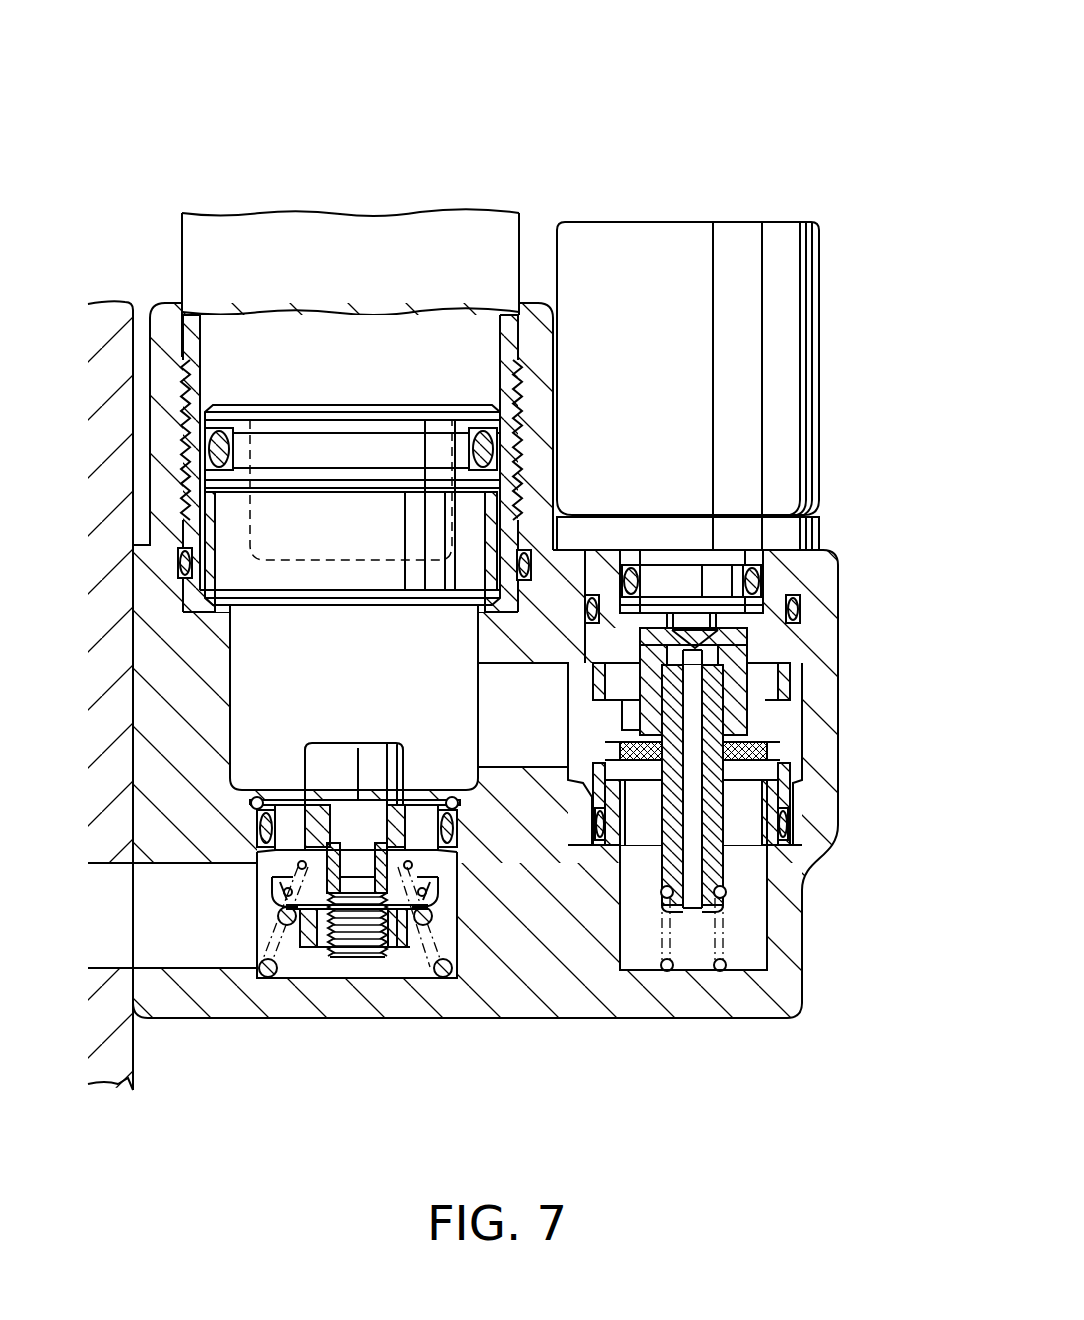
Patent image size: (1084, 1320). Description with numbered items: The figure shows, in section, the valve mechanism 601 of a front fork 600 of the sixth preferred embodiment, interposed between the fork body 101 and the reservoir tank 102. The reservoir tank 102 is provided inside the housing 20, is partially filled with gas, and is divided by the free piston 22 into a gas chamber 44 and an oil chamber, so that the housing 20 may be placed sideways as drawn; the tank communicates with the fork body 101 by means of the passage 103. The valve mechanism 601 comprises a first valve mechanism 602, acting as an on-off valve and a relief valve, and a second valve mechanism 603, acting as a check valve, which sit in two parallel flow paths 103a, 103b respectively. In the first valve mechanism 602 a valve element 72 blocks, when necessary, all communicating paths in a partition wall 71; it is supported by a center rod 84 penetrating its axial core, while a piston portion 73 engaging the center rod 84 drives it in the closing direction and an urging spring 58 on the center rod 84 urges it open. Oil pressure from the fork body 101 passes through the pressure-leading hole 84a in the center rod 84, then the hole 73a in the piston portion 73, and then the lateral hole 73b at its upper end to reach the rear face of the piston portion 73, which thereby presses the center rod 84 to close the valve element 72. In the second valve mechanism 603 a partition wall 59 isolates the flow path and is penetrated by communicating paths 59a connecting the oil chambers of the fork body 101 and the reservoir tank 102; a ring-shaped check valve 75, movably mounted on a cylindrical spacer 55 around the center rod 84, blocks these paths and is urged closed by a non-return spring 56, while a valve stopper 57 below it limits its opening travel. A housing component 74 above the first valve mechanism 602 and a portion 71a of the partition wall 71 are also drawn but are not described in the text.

The front fork 600 is at (509, 594).
The valve mechanism 601 is at (744, 580).
The reservoir tank 102 is at (343, 206).
The actuator case 74 is at (668, 221).
The fork body 101 is at (109, 296).
The gas chamber 44 is at (364, 369).
The first valve mechanism 602 is at (861, 549).
The lateral hole 73b is at (735, 629).
The hole 73a is at (702, 655).
The piston portion 73 is at (740, 680).
The valve element 72 is at (767, 748).
The free piston 22 is at (322, 614).
The partition wall 59 is at (273, 803).
The communicating paths 59a is at (426, 806).
The partition wall 71 is at (750, 838).
The holder bore 71a is at (757, 877).
The flow path 103a is at (752, 947).
The check valve 75 is at (273, 866).
The non-return spring 56 is at (417, 873).
The valve stopper 57 is at (447, 922).
The second valve mechanism 603 is at (241, 952).
The cylindrical spacer 55 is at (317, 957).
The housing 20 is at (390, 1005).
The flow path 103b is at (470, 985).
The center rod 84 is at (668, 868).
The pressure-leading hole 84a is at (692, 913).
The urging spring 58 is at (722, 972).
The passage 103 is at (178, 952).